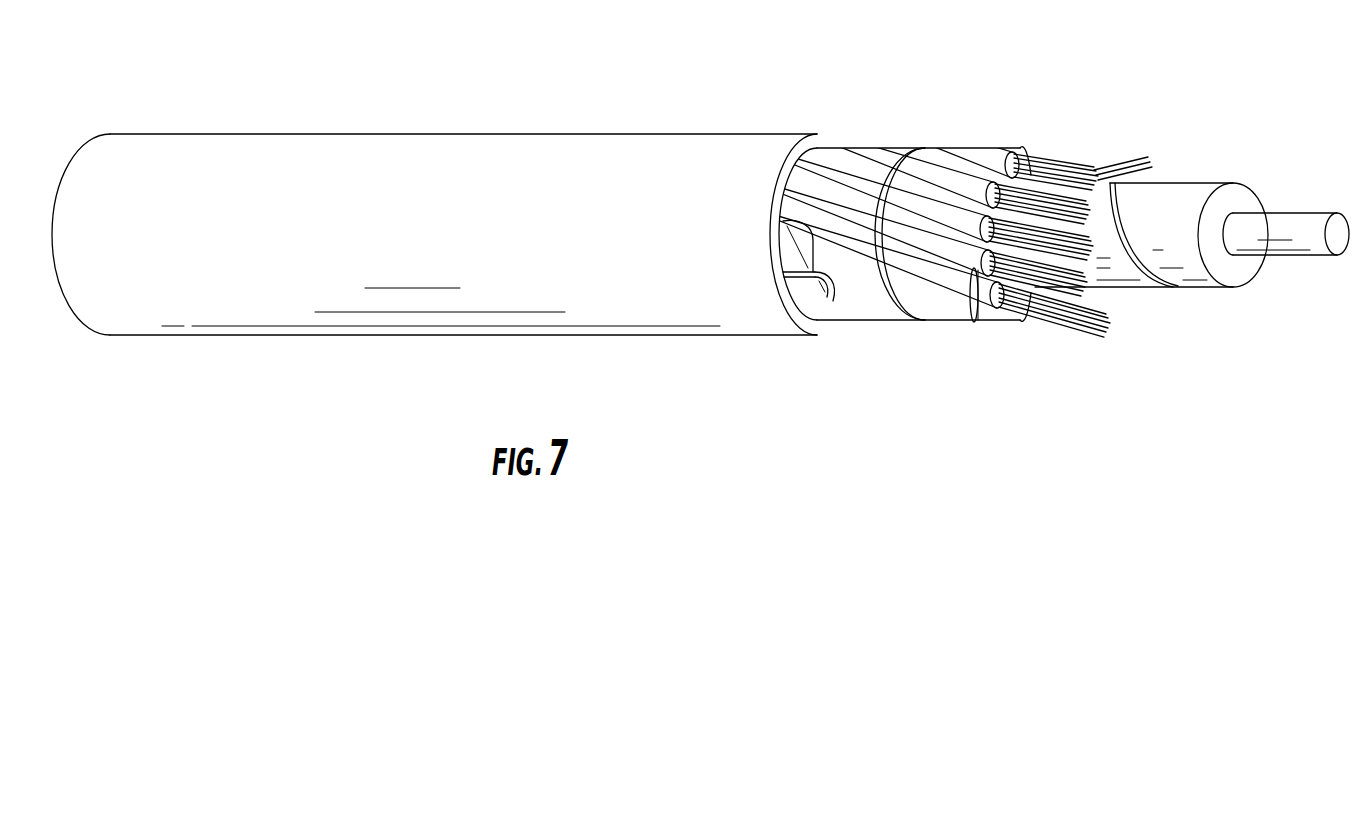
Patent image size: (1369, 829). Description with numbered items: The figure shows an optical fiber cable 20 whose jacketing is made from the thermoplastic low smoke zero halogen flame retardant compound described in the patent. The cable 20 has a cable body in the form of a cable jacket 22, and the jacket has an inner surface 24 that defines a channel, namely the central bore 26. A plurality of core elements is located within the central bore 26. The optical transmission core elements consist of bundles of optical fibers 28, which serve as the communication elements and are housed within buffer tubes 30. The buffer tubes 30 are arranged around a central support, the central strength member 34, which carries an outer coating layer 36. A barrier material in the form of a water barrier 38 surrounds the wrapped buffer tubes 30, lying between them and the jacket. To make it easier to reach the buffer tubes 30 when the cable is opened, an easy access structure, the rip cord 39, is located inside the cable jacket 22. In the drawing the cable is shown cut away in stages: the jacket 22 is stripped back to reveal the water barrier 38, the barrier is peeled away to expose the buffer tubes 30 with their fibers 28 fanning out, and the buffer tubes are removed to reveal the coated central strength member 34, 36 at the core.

The optical fiber cable 20 is at (1210, 88).
The cable jacket 22 is at (517, 141).
The inner surface 24 is at (813, 322).
The central bore 26 is at (836, 307).
The optical fibers 28 is at (1146, 160).
The buffer tubes 30 is at (987, 158).
The central strength member 34 is at (1300, 220).
The outer coating layer 36 is at (1242, 197).
The water barrier 38 is at (885, 148).
The rip cord 39 is at (785, 223).